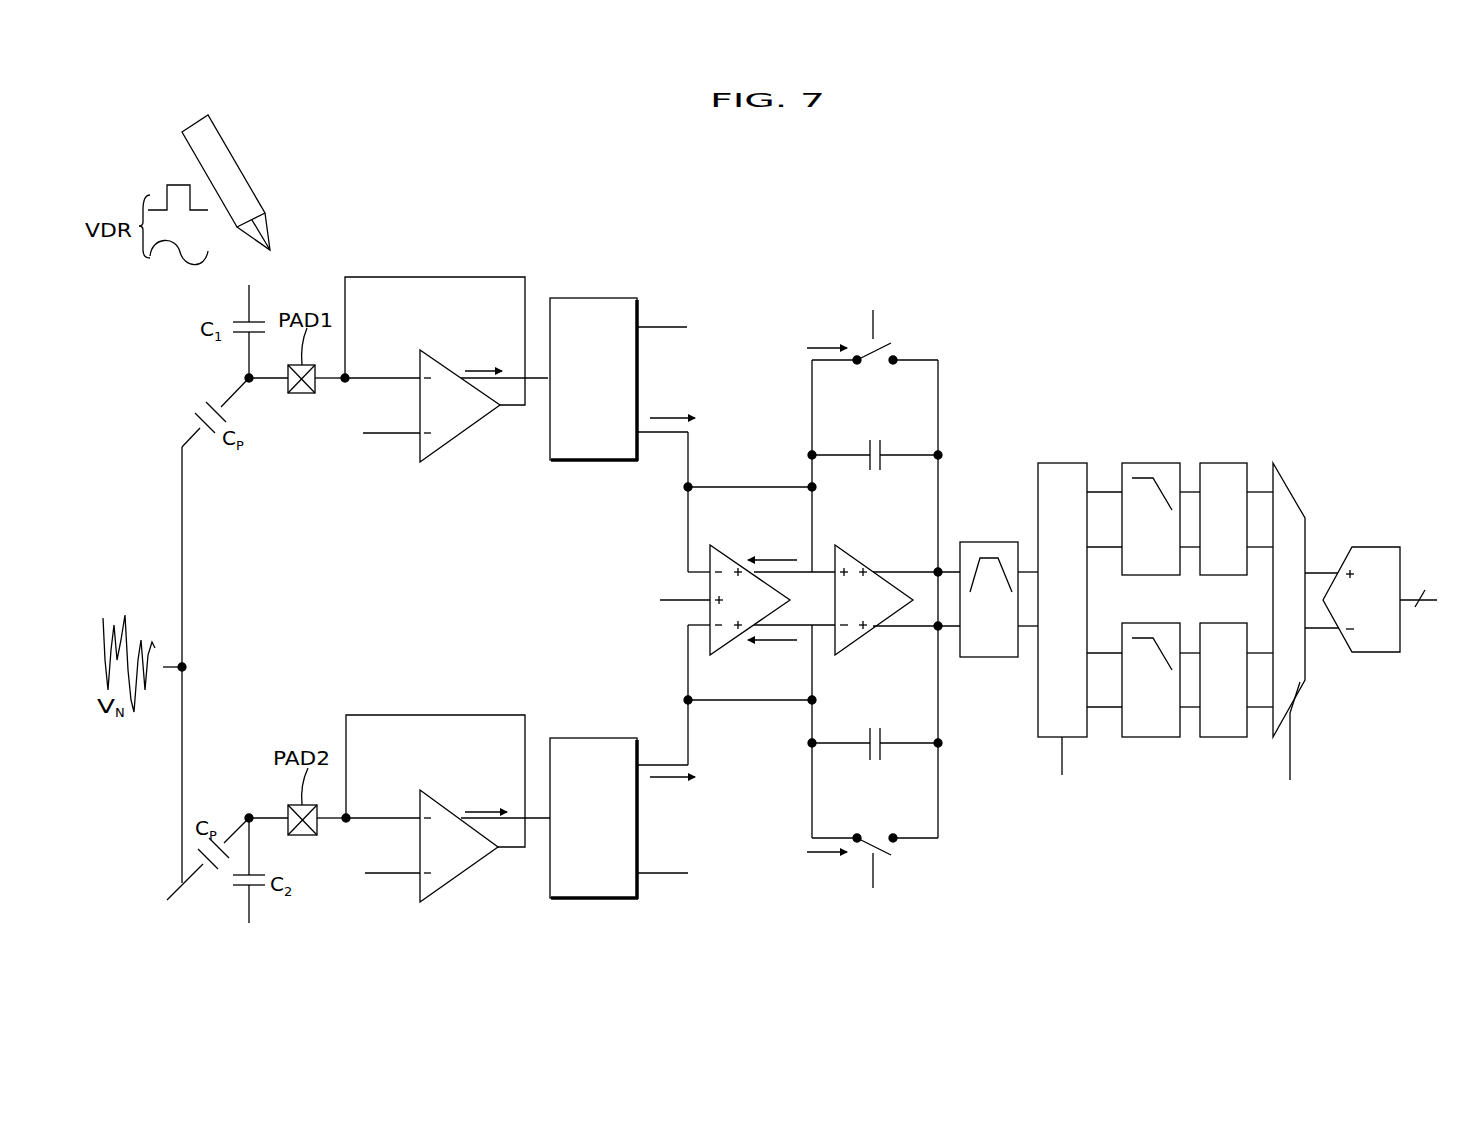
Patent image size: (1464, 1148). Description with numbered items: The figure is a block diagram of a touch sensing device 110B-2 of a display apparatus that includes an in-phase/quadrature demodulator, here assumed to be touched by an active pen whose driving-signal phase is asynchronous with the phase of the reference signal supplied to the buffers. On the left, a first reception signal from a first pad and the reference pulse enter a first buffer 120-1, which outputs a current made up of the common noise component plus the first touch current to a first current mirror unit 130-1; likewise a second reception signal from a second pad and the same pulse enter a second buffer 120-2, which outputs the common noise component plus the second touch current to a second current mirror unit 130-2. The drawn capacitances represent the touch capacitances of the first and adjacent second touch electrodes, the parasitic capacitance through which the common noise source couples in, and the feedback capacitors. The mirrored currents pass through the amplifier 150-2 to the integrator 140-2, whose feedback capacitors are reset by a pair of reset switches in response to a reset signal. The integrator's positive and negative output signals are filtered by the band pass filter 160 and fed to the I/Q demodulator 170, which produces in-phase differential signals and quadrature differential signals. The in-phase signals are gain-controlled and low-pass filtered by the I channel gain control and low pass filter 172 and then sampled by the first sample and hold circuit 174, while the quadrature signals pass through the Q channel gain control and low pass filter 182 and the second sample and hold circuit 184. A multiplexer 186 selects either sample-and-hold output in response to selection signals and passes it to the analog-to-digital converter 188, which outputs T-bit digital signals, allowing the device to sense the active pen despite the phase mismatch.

The touch sensing device 110B-2 is at (1018, 263).
The first buffer 120-1 is at (460, 435).
The second buffer 120-2 is at (457, 877).
The first current mirror unit 130-1 is at (605, 297).
The second current mirror unit 130-2 is at (605, 737).
The integrator 140-2 is at (853, 552).
The differential amplifier 150-2 is at (723, 552).
The band pass filter 160 is at (988, 540).
The I/Q demodulator 170 is at (1062, 460).
The I channel gain control and low pass filter 172 is at (1150, 462).
The first sample and hold circuit 174 is at (1222, 462).
The Q channel gain control and low pass filter 182 is at (1150, 738).
The second sample and hold circuit 184 is at (1222, 738).
The multiplexer 186 is at (1292, 488).
The analog-to-digital converter 188 is at (1377, 545).